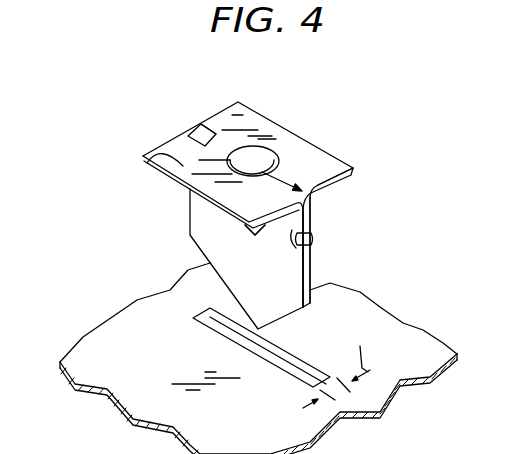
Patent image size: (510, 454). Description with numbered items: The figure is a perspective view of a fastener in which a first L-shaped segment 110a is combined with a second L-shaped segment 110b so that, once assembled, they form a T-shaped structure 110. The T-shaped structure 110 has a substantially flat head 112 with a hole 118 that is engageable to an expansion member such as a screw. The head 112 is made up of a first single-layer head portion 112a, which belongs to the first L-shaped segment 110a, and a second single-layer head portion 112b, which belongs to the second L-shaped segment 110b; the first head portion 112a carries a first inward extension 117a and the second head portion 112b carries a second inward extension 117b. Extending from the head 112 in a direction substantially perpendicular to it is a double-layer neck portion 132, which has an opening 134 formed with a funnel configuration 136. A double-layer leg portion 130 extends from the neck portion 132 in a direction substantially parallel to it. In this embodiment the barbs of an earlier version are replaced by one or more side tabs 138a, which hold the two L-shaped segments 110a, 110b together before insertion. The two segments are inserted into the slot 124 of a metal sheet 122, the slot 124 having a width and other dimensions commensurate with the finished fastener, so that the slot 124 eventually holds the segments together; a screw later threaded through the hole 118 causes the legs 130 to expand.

The T-shaped structure 110 is at (150, 22).
The first L-shaped segment 110a is at (196, 104).
The second L-shaped segment 110b is at (138, 132).
The substantially flat head 112 is at (319, 183).
The first single-layer head portion 112a is at (290, 147).
The second single-layer head portion 112b is at (147, 163).
The first inward extension 117a is at (204, 128).
The second inward extension 117b is at (189, 135).
The hole 118 is at (255, 160).
The metal sheet 122 is at (403, 328).
The slot 124 is at (203, 312).
The double-layer leg portion 130 is at (283, 292).
The double-layer neck portion 132 is at (318, 215).
The opening 134 is at (205, 197).
The funnel configuration 136 is at (248, 224).
The side tab 138a is at (313, 232).